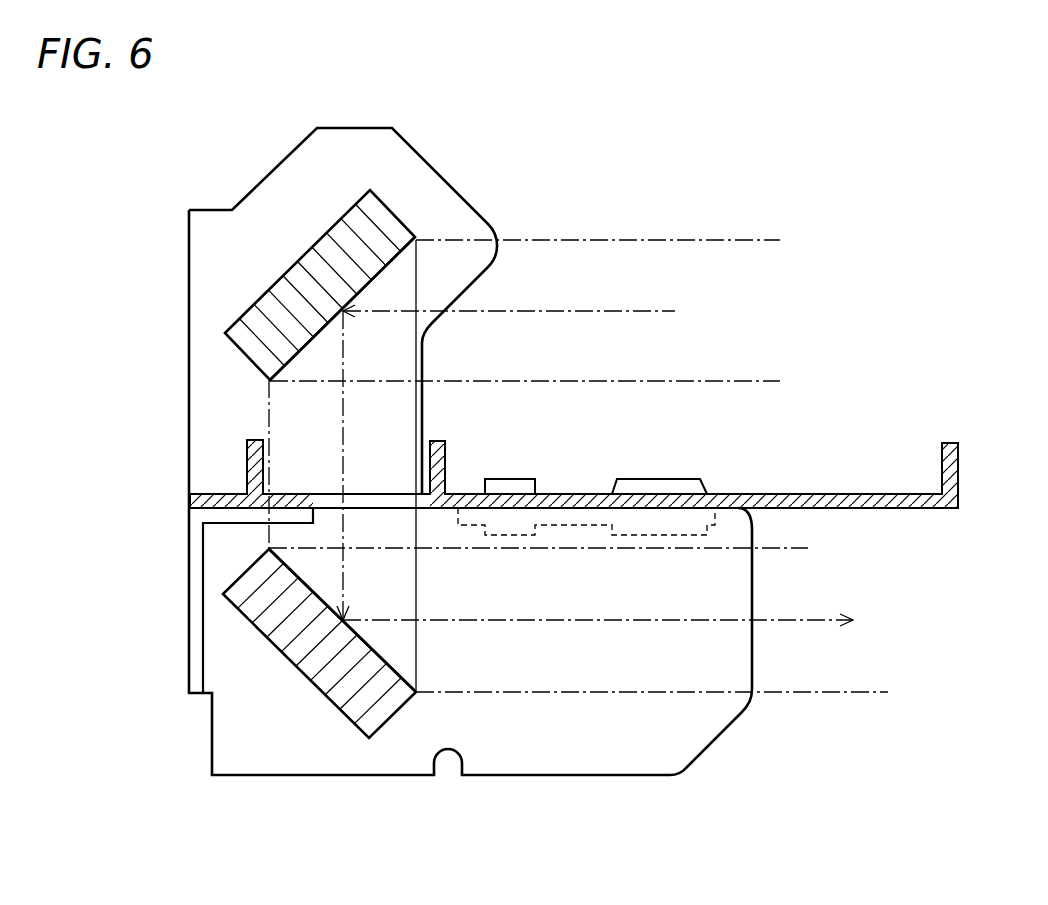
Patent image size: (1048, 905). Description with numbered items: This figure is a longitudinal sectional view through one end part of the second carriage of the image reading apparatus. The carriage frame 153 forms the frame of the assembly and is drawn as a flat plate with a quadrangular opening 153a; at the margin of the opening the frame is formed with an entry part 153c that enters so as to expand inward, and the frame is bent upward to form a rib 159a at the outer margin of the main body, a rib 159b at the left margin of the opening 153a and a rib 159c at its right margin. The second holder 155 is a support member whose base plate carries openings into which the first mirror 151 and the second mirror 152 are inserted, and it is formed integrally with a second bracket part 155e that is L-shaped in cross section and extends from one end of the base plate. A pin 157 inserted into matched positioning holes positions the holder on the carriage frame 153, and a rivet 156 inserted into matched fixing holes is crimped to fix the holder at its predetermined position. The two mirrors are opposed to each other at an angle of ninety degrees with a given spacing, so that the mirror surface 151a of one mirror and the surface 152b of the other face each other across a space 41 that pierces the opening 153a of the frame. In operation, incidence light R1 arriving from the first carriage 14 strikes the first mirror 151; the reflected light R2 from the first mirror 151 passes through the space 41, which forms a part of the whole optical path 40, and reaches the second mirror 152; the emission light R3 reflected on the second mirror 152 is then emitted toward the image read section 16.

The second holder 155 is at (343, 140).
The second bracket part 155e is at (233, 523).
The first mirror 151 is at (393, 215).
The mirror surface 151a is at (297, 357).
The second mirror 152 is at (302, 673).
The reflecting surface of second prism 152b is at (318, 593).
The carriage frame 153 is at (593, 495).
The opening 153a is at (365, 500).
The entry part 153c is at (287, 492).
The rib 159a is at (958, 463).
The rib 159b is at (253, 437).
The rib 159c is at (447, 470).
The rivet 156 is at (650, 478).
The pin 157 is at (517, 485).
The space 41 is at (418, 297).
The whole optical path 40 is at (765, 240).
The incidence light R1 is at (580, 312).
The reflected light R2 is at (343, 470).
The emission light R3 is at (548, 620).
The first carriage 14 is at (709, 315).
The image read section 16 is at (884, 624).